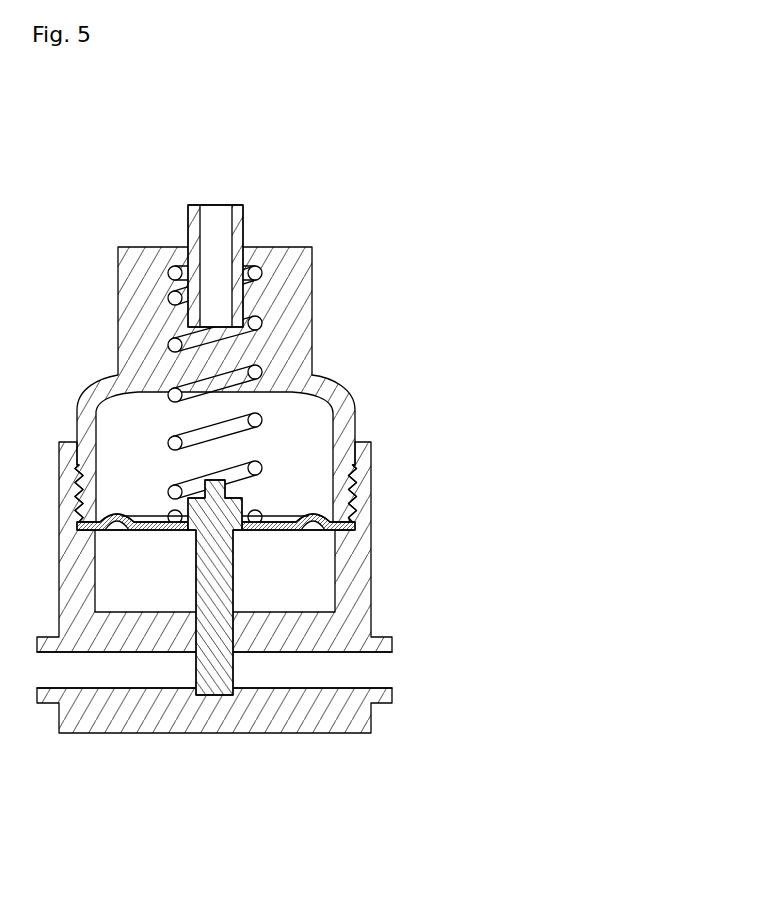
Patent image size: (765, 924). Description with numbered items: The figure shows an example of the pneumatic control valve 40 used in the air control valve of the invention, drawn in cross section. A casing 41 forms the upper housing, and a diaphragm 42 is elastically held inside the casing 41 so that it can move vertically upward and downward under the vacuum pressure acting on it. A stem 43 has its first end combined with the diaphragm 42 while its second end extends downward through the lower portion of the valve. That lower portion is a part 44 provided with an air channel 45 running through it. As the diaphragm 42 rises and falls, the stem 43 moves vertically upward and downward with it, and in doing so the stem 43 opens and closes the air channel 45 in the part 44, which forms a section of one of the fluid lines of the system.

The pneumatic control valve 40 is at (329, 164).
The casing 41 is at (330, 382).
The diaphragm 42 is at (283, 519).
The stem 43 is at (225, 568).
The part 44 is at (362, 717).
The air channel 45 is at (268, 672).